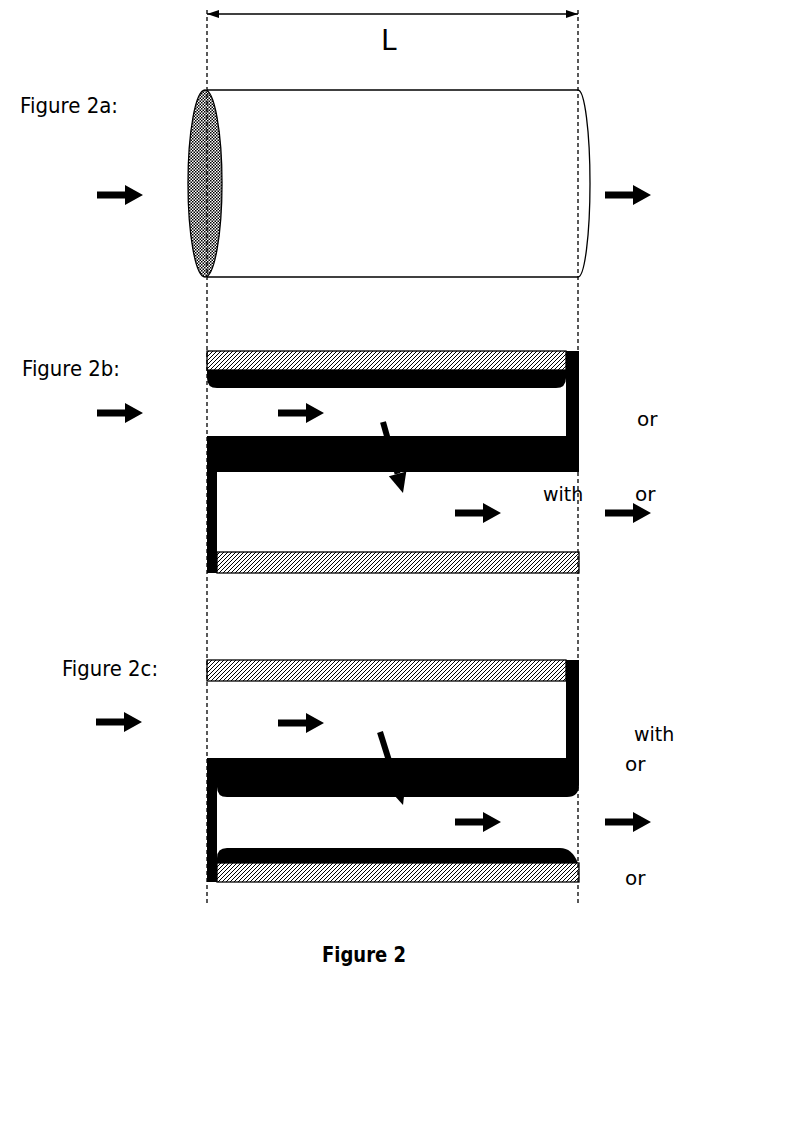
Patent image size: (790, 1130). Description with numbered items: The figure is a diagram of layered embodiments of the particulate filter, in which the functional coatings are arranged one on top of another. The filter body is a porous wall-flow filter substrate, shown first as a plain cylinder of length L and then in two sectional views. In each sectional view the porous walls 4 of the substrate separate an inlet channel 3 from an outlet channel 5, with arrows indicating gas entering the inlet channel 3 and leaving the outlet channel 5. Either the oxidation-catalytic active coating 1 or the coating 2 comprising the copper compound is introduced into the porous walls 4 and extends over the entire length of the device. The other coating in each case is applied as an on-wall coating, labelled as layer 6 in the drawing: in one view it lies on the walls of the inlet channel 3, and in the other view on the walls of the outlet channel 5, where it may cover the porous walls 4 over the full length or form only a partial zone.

In FIG. 2b, the oxidation-catalytic active coating 1 is at (458, 462).
In FIG. 2c, the oxidation-catalytic active coating 1 is at (442, 775).
In FIG. 2b, the coating comprising the copper compound 2 is at (520, 435).
In FIG. 2c, the coating comprising the copper compound 2 is at (507, 797).
In FIG. 2b, the inlet channel 3 is at (318, 447).
In FIG. 2c, the inlet channel 3 is at (318, 758).
In FIG. 2b, the porous walls 4 is at (447, 472).
In FIG. 2c, the porous walls 4 is at (530, 760).
In FIG. 2b, the outlet channel 5 is at (290, 470).
In FIG. 2c, the outlet channel 5 is at (236, 797).
In FIG. 2b, the wall coating 6 is at (410, 437).
In FIG. 2c, the wall coating 6 is at (363, 758).